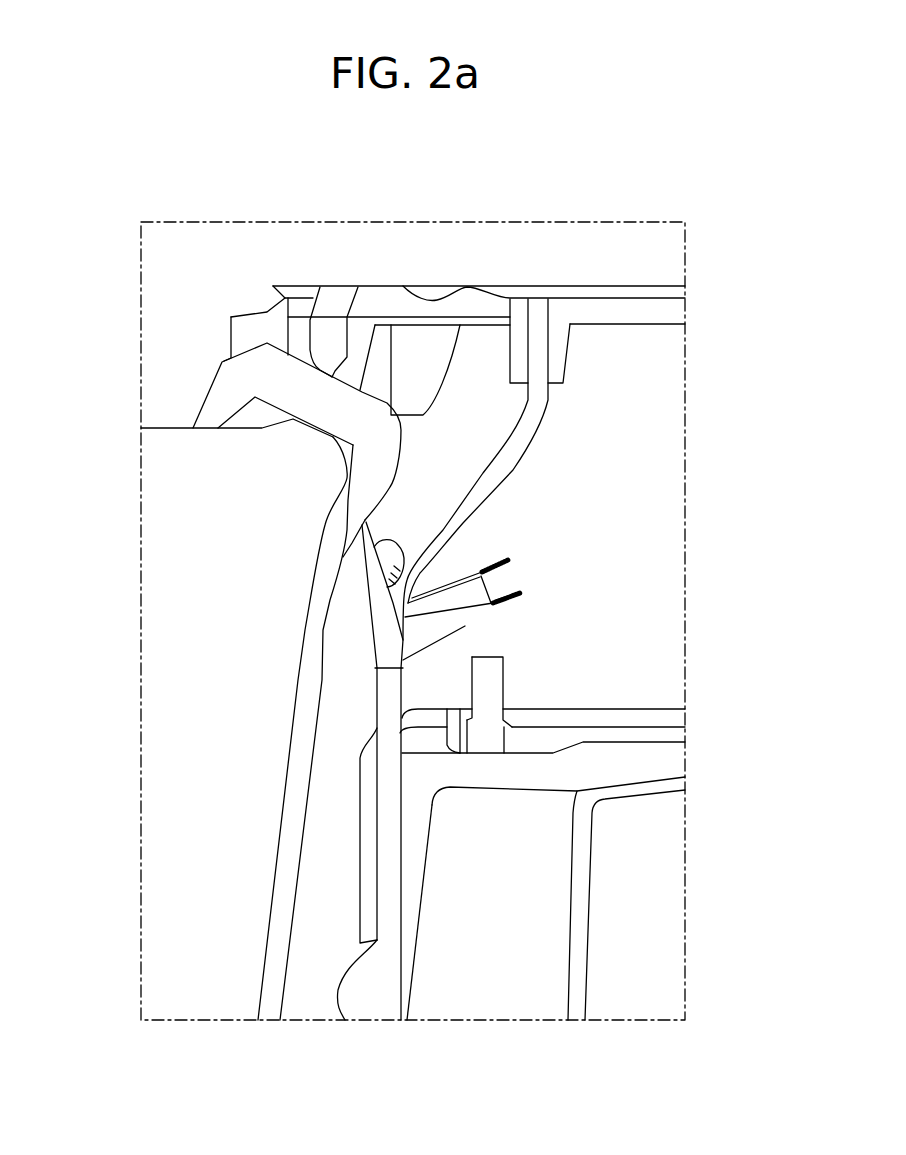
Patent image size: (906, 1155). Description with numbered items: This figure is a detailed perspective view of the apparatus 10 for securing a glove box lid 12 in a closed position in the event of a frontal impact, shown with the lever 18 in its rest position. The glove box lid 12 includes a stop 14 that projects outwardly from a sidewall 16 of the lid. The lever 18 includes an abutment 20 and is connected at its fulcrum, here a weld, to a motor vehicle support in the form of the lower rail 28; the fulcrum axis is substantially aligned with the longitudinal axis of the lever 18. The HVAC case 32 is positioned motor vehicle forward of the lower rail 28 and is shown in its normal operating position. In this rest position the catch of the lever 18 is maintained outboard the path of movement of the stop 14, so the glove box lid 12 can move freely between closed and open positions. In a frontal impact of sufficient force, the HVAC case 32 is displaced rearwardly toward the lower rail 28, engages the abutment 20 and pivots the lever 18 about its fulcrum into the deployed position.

The apparatus 10 is at (658, 202).
The glove box lid 12 is at (628, 880).
The stop 14 is at (492, 682).
The sidewall 16 is at (525, 753).
The lever 18 is at (465, 627).
The abutment 20 is at (367, 603).
The lower rail 28 is at (387, 775).
The HVAC case 32 is at (192, 613).